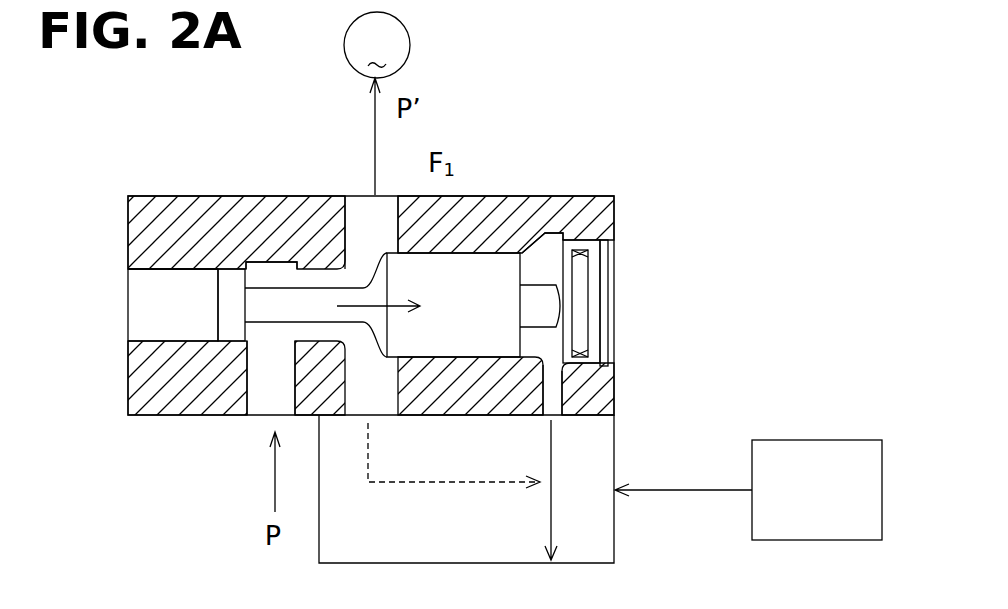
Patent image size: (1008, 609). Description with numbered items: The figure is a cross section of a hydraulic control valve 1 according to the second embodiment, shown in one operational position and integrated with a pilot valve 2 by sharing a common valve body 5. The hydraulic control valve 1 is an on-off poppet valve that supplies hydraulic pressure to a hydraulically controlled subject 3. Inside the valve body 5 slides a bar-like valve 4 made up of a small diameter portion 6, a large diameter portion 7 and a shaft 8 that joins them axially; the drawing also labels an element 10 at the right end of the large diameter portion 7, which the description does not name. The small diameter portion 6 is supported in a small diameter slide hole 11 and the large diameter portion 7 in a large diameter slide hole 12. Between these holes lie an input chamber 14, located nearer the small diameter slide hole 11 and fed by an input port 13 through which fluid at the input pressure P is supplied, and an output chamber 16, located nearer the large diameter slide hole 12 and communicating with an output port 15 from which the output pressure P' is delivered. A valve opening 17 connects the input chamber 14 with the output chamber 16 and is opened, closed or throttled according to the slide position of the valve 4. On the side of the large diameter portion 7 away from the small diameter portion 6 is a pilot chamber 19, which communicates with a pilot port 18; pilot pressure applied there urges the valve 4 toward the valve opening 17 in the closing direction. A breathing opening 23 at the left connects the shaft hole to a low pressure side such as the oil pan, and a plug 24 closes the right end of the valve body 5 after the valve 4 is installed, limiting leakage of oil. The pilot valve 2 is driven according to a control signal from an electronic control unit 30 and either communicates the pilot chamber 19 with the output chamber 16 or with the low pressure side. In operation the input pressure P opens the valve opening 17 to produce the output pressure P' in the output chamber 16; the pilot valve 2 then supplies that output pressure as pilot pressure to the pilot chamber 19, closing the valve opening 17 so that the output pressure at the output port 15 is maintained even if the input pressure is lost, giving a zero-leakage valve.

The hydraulic control valve 1 is at (147, 179).
The pilot valve 2 is at (447, 567).
The hydraulically controlled subject 3 is at (377, 45).
The valve 4 is at (540, 263).
The valve body 5 is at (505, 215).
The small diameter portion 6 is at (228, 277).
The large diameter portion 7 is at (447, 266).
The shaft 8 is at (318, 292).
The stem 10 is at (552, 305).
The small diameter slide hole 11 is at (178, 270).
The large diameter slide hole 12 is at (437, 343).
The input port 13 is at (263, 403).
The input chamber 14 is at (257, 260).
The output port 15 is at (385, 215).
The output chamber 16 is at (363, 270).
The valve opening 17 is at (336, 278).
The pilot port 18 is at (553, 390).
The pilot chamber 19 is at (556, 268).
The breathing opening 23 is at (147, 302).
The plug 24 is at (600, 327).
The electronic control unit 30 is at (827, 452).